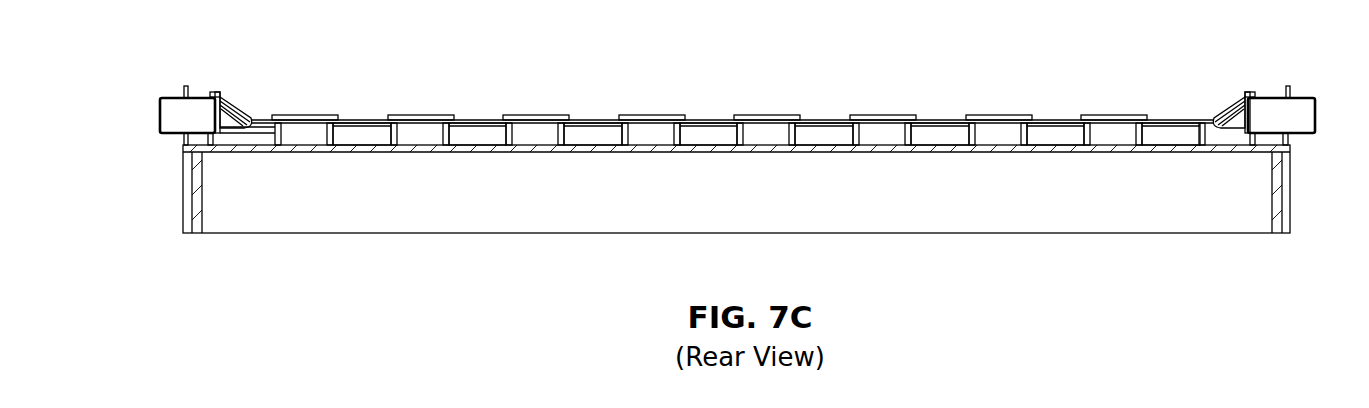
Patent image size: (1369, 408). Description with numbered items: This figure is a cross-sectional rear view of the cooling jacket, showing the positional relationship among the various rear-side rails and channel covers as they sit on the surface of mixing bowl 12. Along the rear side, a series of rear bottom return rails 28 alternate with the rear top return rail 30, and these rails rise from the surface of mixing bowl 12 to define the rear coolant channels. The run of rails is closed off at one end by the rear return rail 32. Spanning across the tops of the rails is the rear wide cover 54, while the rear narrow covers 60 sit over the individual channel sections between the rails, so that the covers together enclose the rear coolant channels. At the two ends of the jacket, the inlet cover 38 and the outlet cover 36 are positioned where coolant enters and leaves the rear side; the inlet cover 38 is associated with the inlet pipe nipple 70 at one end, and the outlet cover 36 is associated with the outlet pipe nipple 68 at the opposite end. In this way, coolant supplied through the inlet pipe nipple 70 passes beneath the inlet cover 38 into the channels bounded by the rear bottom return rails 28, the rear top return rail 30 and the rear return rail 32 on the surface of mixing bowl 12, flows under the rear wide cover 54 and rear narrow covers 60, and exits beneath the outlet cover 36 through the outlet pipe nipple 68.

The surface of mixing bowl 12 is at (253, 152).
The rear bottom return rail 28 is at (281, 136).
The rear top return rail 30 is at (334, 136).
The rear return rail 32 is at (1206, 136).
The outlet cover 36 is at (1233, 100).
The inlet cover 38 is at (238, 106).
The rear wide cover 54 is at (358, 120).
The rear narrow cover 60 is at (298, 115).
The outlet pipe nipple 68 is at (1302, 138).
The inlet pipe nipple 70 is at (166, 138).